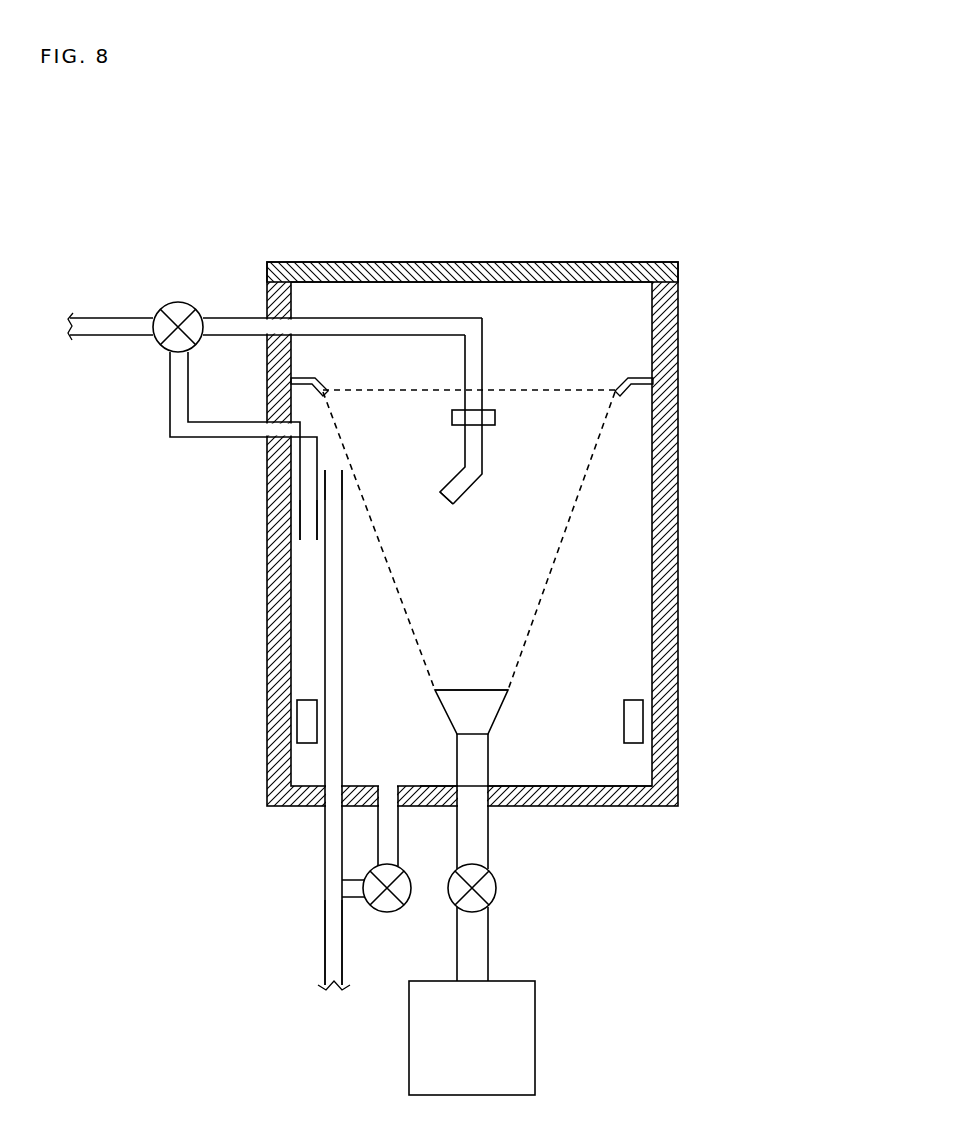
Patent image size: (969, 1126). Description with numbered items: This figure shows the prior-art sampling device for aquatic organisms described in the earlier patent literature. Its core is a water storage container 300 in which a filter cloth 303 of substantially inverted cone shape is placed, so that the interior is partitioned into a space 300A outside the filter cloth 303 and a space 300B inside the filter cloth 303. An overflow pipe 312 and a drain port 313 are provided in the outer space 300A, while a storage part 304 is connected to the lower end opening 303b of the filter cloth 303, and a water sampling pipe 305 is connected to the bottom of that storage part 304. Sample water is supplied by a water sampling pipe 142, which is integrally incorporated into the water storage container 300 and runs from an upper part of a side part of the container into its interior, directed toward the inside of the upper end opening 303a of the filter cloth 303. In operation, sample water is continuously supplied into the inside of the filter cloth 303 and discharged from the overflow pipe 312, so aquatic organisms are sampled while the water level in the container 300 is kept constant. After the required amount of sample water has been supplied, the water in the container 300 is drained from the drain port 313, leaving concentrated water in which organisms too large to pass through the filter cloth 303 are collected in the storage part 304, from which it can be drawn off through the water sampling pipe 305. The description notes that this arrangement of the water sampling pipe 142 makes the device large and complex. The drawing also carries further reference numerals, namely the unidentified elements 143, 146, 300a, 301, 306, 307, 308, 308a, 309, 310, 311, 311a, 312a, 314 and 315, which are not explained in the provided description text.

The powder collecting unit 143 is at (640, 216).
The water sampling pipe 142 is at (102, 317).
The return pipe 146 is at (325, 940).
The water storage container 300 is at (678, 432).
The space outside the filter cloth 300A is at (620, 628).
The space inside the filter cloth 300B is at (405, 437).
The bottom of container 300a is at (545, 785).
The lid 301 is at (531, 262).
The filter cloth 303 is at (555, 563).
The upper end opening 303a is at (527, 390).
The lower end opening 303b is at (510, 685).
The storage part 304 is at (500, 707).
The water sampling pipe 305 is at (487, 945).
The discharge valve 306 is at (497, 887).
The collection tank 307 is at (536, 1037).
The nozzle pipe 308 is at (470, 493).
The nozzle outlet 308a is at (442, 498).
The flange 309 is at (495, 418).
The switching valve 310 is at (178, 302).
The branch pipe 311 is at (170, 412).
The outlet of branch pipe 311a is at (302, 540).
The overflow pipe 312 is at (327, 612).
The inlet of exhaust pipe 312a is at (335, 470).
The drain port 313 is at (392, 785).
The valve 314 is at (388, 913).
The sensor 315 is at (297, 713).